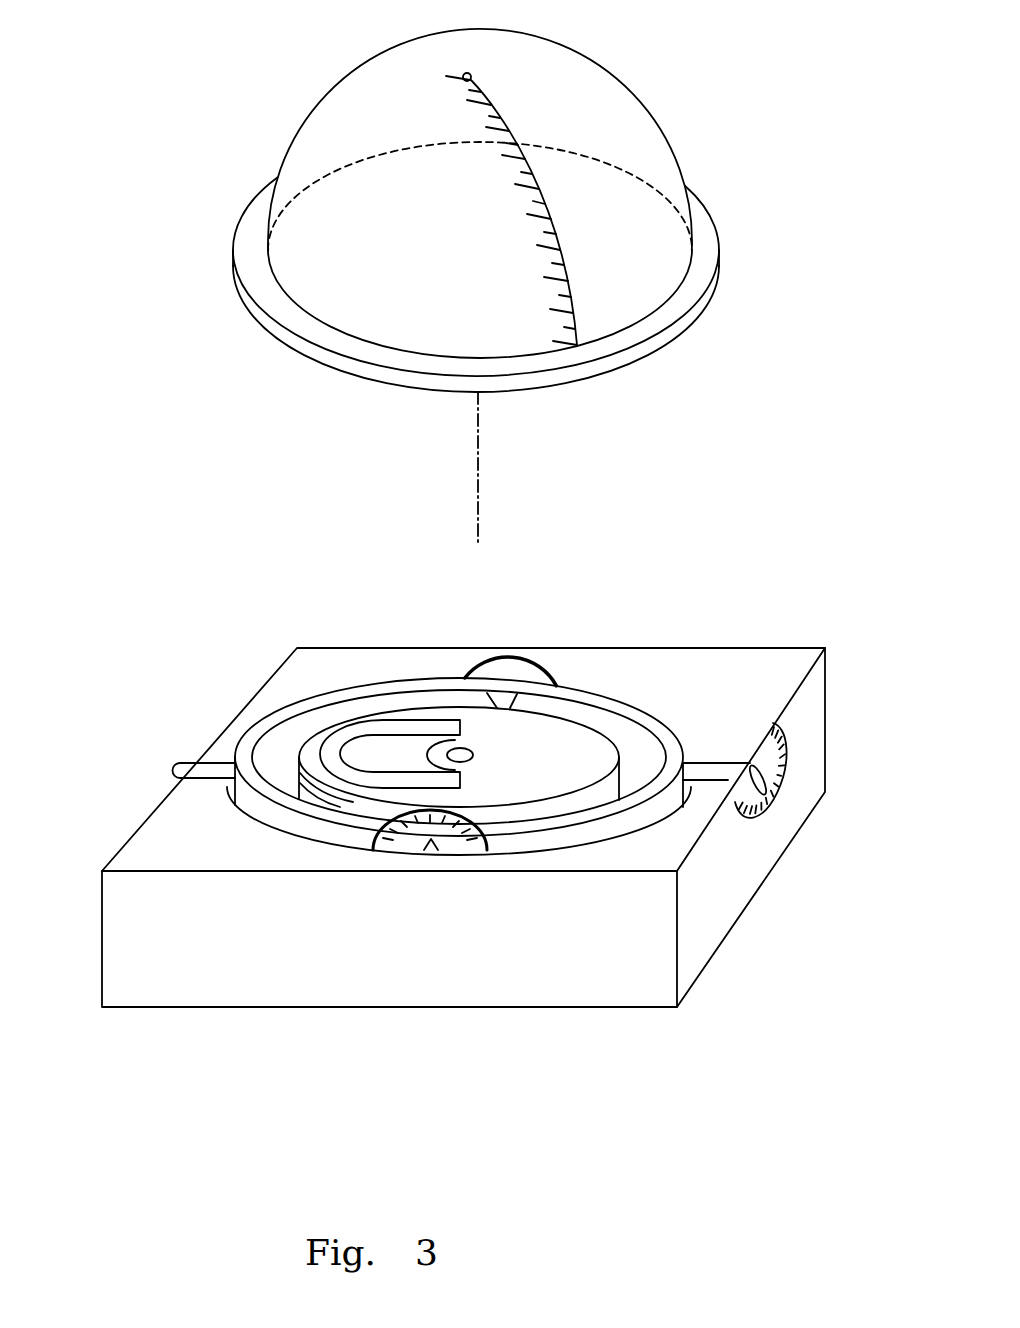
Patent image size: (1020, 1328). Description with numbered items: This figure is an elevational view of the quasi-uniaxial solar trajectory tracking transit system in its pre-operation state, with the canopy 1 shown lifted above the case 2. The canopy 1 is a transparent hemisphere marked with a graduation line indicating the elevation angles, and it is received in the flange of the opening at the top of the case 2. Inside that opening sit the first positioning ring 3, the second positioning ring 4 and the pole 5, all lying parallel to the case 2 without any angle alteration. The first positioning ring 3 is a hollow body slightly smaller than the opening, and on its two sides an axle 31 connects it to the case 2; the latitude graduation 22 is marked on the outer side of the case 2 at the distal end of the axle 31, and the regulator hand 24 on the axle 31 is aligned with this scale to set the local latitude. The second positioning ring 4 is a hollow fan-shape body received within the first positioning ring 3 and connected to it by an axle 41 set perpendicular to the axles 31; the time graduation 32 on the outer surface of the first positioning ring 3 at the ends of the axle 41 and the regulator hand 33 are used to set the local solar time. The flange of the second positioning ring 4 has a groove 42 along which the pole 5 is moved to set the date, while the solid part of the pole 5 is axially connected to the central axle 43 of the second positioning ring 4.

The canopy 1 is at (680, 152).
The case 2 is at (660, 1033).
The first positioning ring 3 is at (485, 673).
The second positioning ring 4 is at (615, 748).
The pole 5 is at (357, 750).
The latitude graduation 22 is at (747, 792).
The regulator hand 24 is at (763, 793).
The axle 31 is at (205, 775).
The time graduation 32 is at (470, 688).
The regulator hand 33 is at (433, 850).
The axle 41 is at (503, 700).
The groove 42 is at (347, 805).
The axle 43 is at (460, 753).